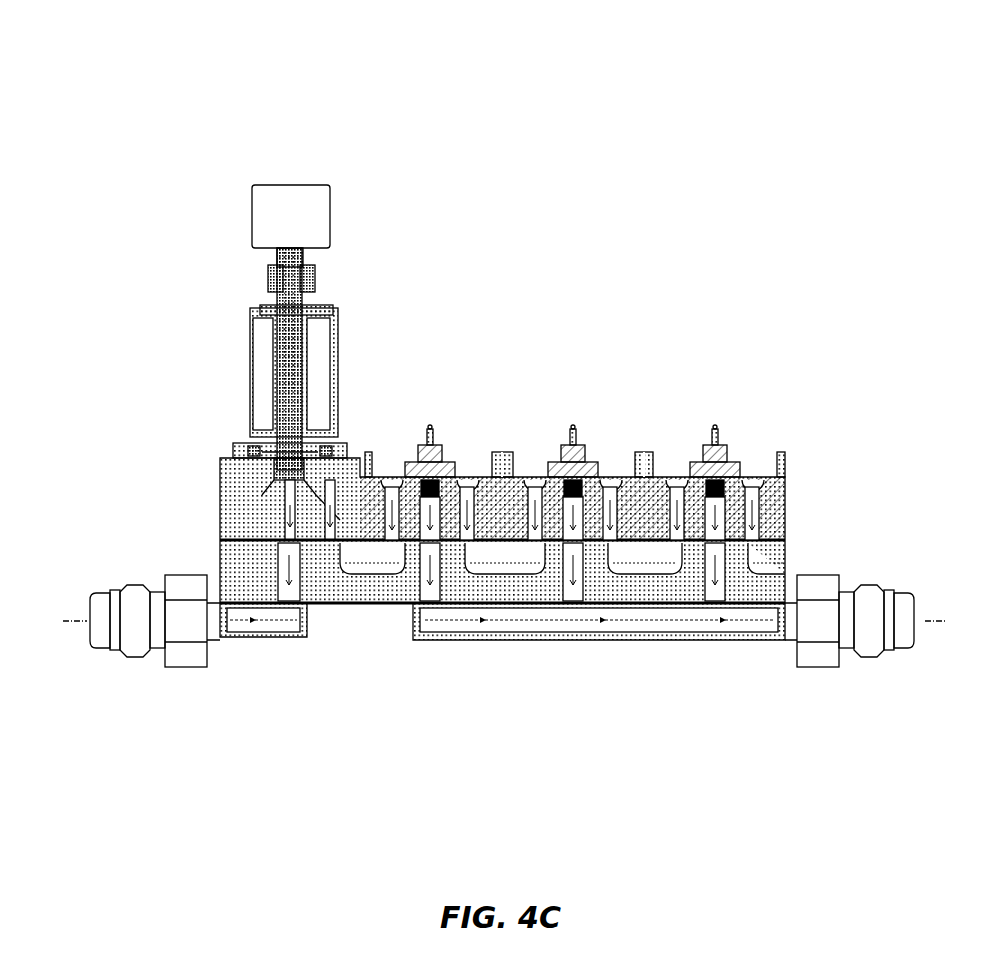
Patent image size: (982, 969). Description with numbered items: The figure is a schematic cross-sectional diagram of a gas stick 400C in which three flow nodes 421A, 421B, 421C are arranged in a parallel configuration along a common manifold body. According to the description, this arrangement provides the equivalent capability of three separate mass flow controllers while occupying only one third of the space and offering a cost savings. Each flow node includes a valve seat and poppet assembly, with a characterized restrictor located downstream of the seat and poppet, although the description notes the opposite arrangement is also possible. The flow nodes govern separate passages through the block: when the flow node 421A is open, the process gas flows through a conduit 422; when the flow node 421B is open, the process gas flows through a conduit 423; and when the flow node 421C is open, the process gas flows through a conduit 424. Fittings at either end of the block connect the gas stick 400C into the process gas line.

The gas stick 400C is at (780, 40).
The flow node 421A is at (380, 477).
The flow node 421B is at (553, 465).
The flow node 421C is at (783, 478).
The conduit 422 is at (420, 521).
The conduit 423 is at (572, 518).
The conduit 424 is at (770, 487).